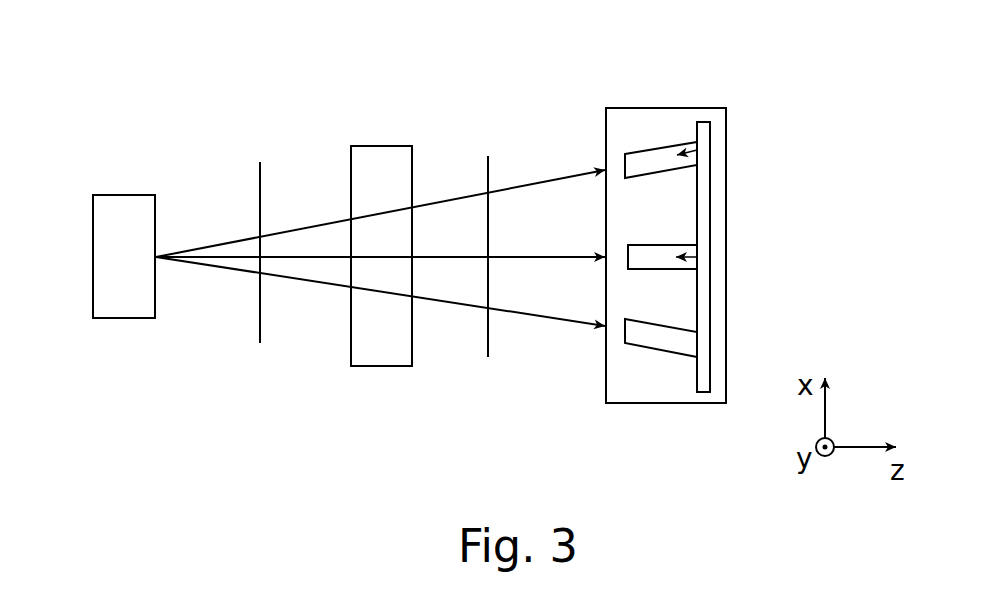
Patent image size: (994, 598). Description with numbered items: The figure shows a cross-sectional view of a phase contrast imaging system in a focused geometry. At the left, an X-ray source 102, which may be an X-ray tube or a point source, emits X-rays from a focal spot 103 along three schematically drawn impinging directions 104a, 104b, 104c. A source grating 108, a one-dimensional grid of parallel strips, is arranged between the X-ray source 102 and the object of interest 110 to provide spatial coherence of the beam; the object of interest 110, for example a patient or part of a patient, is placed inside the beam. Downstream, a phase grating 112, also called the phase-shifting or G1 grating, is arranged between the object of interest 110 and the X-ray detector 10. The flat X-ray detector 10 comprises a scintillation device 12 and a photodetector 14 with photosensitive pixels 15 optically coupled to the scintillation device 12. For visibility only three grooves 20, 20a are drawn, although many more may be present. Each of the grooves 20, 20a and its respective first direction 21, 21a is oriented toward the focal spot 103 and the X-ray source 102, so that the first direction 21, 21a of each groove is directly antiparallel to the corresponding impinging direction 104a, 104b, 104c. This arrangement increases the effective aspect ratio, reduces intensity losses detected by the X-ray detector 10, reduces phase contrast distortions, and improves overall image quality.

The X-ray detector 10 is at (702, 94).
The scintillation device 12 is at (617, 107).
The photodetector 14 is at (730, 108).
The photosensitive pixels 15 is at (708, 159).
The grooves 20 is at (672, 143).
The groove 20a is at (673, 243).
The first direction 21 is at (677, 155).
The first direction 21a is at (676, 257).
The X-ray source 102 is at (125, 193).
The focal spot 103 is at (158, 258).
The impinging direction 104a is at (437, 255).
The impinging direction 104b is at (300, 227).
The impinging direction 104c is at (455, 308).
The source grating 108 is at (262, 345).
The object of interest 110 is at (387, 367).
The phase grating 112 is at (488, 345).